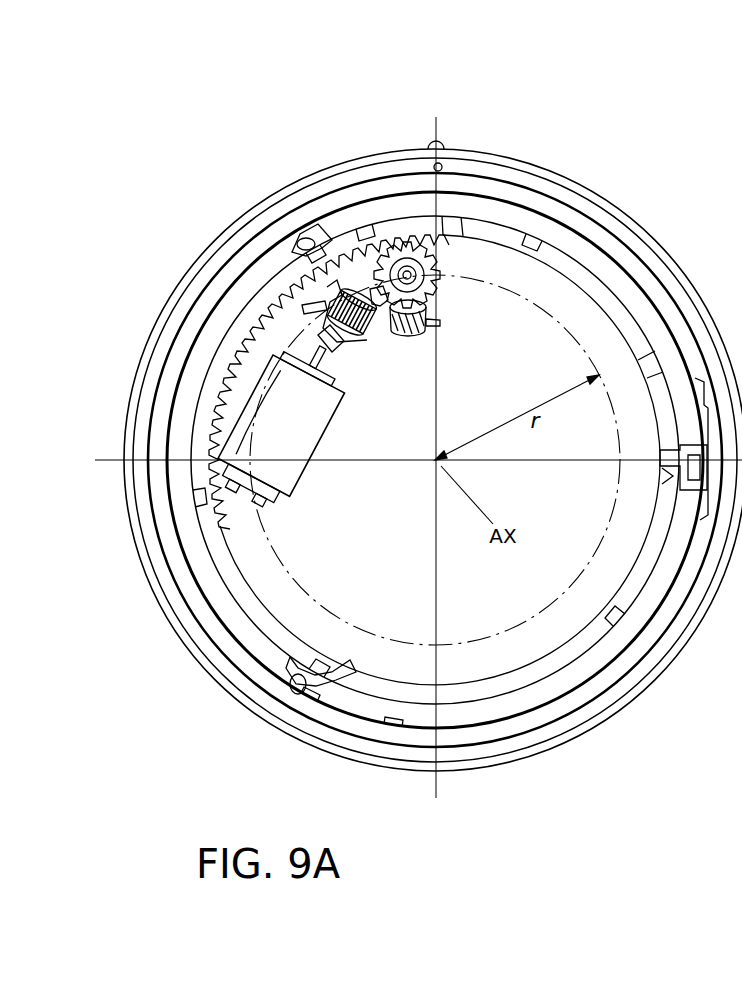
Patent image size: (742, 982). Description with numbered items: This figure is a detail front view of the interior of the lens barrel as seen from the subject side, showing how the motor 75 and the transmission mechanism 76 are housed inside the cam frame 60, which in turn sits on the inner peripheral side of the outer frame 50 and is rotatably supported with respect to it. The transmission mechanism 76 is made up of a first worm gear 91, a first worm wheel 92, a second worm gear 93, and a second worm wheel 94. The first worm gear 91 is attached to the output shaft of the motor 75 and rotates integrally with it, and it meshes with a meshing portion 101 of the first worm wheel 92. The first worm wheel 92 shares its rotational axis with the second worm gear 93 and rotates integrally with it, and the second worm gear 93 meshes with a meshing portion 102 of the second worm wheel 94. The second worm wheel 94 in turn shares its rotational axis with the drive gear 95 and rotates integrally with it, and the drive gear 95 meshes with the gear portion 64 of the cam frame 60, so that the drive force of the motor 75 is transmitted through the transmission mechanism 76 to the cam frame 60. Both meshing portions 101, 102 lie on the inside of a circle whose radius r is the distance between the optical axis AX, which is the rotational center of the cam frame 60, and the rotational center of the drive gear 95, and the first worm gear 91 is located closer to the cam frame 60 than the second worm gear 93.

The outer frame 50 is at (178, 590).
The cam frame 60 is at (250, 605).
The gear portion 64 is at (232, 378).
The motor 75 is at (275, 442).
The transmission mechanism 76 is at (261, 70).
The first worm gear 91 is at (304, 330).
The first worm wheel 92 is at (337, 283).
The second worm gear 93 is at (378, 298).
The second worm wheel 94 is at (374, 265).
The drive gear 95 is at (412, 272).
The meshing portion 101 is at (343, 340).
The meshing portion 102 is at (405, 338).